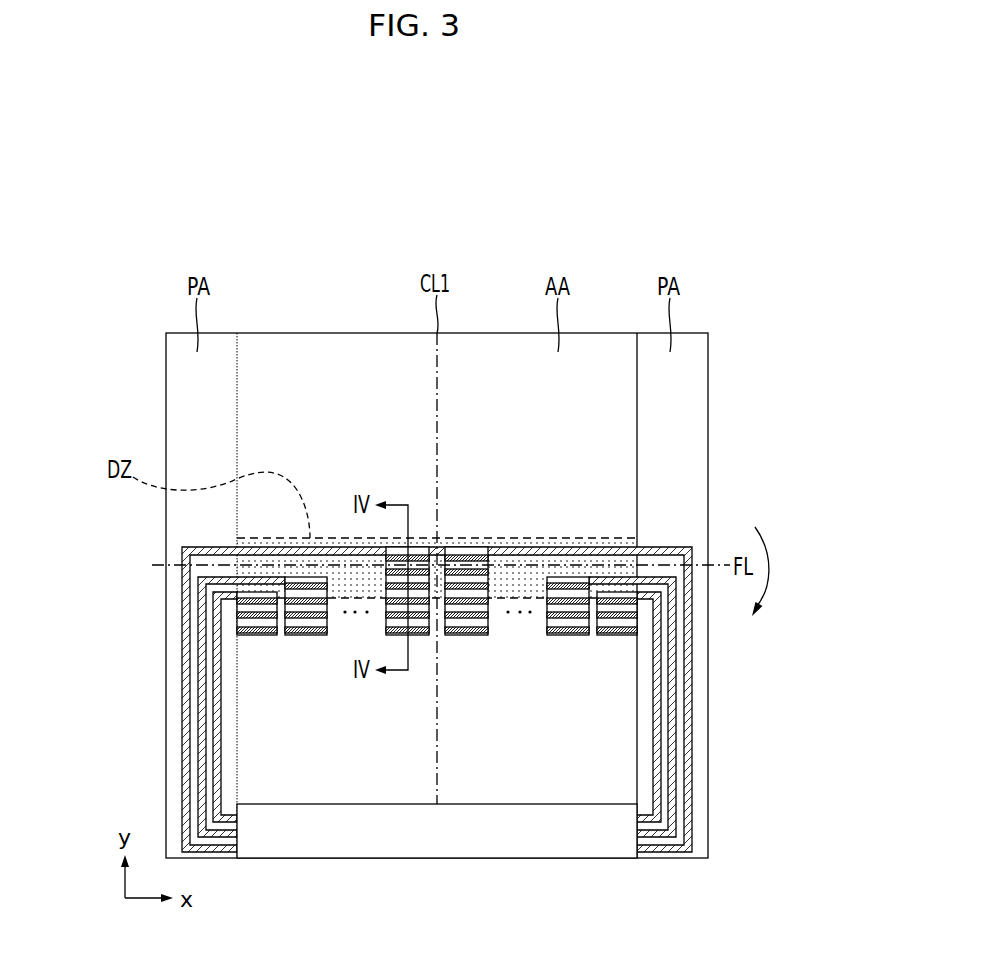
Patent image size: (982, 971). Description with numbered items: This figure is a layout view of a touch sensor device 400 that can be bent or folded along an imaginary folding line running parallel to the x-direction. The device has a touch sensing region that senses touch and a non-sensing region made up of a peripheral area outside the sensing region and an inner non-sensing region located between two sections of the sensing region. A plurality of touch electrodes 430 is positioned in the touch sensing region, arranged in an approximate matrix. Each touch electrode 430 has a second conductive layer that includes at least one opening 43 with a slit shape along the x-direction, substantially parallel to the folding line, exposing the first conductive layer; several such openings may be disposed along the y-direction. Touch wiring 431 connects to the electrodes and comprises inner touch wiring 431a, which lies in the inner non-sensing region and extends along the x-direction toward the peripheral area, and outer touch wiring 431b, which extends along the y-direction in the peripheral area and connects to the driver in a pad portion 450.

The touch sensor device 400 is at (300, 199).
The touch wiring 431 is at (92, 493).
The inner touch wiring 431a is at (275, 547).
The outer touch wiring 431b is at (190, 643).
The touch electrode 430 is at (477, 635).
The opening 43 is at (463, 635).
The pad portion 450 is at (355, 850).